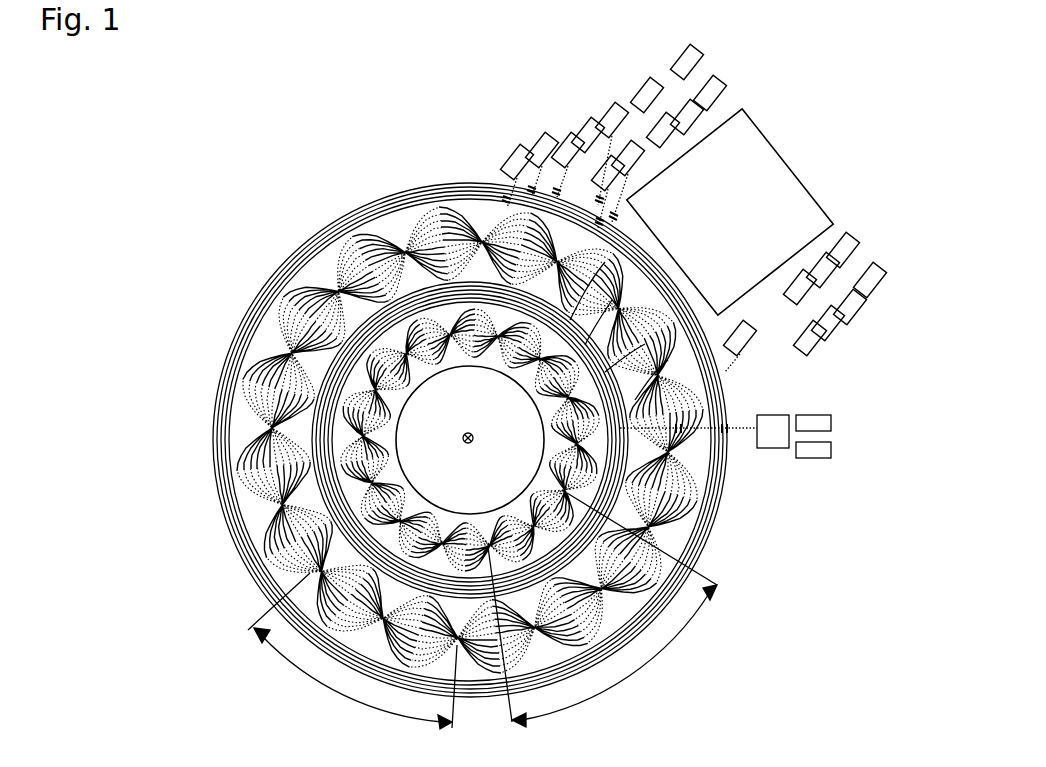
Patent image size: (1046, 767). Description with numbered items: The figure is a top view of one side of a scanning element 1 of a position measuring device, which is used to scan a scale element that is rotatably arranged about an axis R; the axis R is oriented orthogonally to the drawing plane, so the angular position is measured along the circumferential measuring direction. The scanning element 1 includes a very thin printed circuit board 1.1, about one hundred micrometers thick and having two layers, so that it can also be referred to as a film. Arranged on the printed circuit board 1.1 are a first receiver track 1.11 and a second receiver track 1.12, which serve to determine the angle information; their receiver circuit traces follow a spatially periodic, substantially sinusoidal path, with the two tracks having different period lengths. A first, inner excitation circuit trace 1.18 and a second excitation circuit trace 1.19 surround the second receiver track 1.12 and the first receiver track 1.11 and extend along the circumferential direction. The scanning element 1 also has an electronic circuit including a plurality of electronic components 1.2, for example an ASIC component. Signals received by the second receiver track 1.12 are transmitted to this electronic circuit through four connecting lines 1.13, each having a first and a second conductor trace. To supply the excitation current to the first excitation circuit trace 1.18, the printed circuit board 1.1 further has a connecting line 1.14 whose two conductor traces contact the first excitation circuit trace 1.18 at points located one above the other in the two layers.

The scanning element 1 is at (500, 105).
The printed circuit board 1.1 is at (240, 333).
The first receiver track 1.11 is at (240, 396).
The second receiver track 1.12 is at (396, 400).
The connecting lines 1.13 is at (605, 262).
The further connecting line 1.14 is at (678, 422).
The first excitation circuit trace 1.18 is at (370, 530).
The second excitation circuit trace 1.19 is at (215, 468).
The electronic components 1.2 is at (730, 126).
The axis R is at (475, 438).